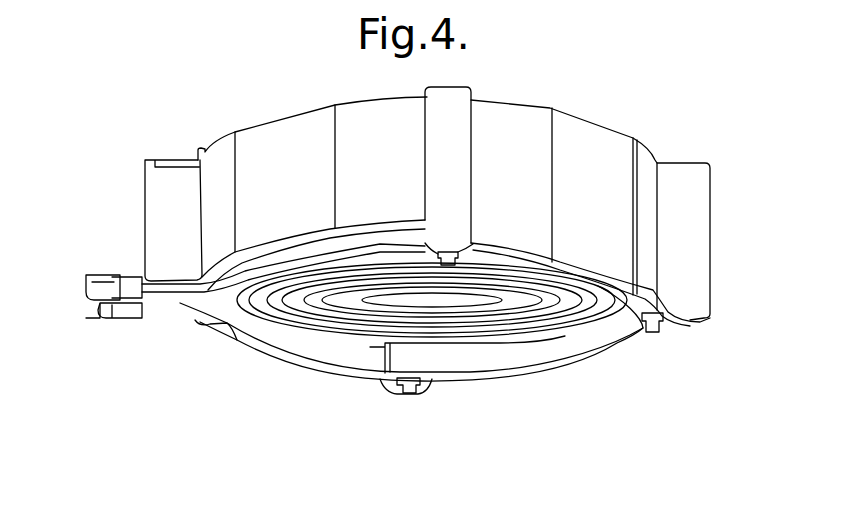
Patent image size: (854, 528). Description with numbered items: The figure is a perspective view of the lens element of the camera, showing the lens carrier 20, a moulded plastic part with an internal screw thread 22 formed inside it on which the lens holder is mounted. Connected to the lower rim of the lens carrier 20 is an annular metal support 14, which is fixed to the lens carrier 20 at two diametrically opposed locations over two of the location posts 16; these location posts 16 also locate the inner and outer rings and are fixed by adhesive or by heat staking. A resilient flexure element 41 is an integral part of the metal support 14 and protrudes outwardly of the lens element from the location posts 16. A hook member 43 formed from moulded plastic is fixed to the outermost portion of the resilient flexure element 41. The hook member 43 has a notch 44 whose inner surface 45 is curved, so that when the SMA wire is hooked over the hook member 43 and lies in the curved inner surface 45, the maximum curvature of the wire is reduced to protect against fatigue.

The metal support 14 is at (618, 343).
The location posts 16 is at (447, 252).
The lens carrier 20 is at (521, 120).
The internal screw thread 22 is at (335, 315).
The resilient flexure element 41 is at (222, 333).
The hook member 43 is at (91, 281).
The notch 44 is at (90, 326).
The inner surface 45 is at (108, 292).